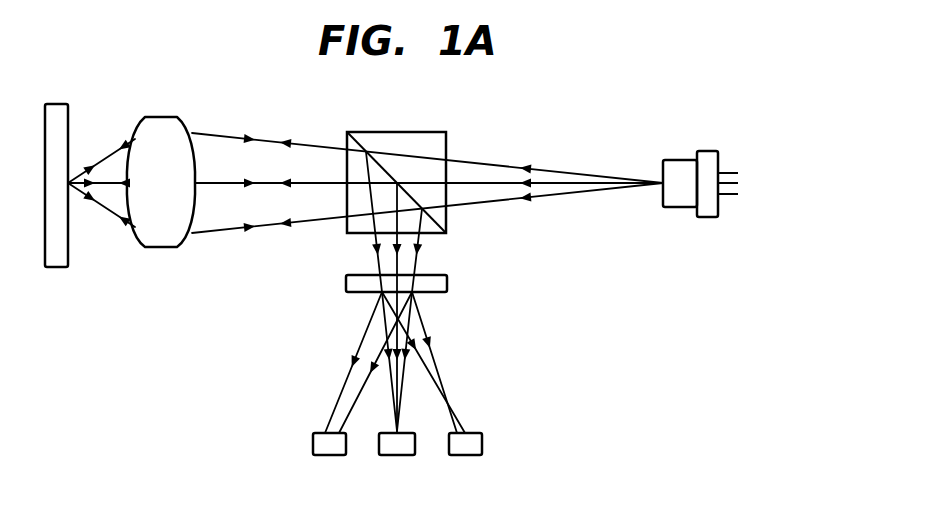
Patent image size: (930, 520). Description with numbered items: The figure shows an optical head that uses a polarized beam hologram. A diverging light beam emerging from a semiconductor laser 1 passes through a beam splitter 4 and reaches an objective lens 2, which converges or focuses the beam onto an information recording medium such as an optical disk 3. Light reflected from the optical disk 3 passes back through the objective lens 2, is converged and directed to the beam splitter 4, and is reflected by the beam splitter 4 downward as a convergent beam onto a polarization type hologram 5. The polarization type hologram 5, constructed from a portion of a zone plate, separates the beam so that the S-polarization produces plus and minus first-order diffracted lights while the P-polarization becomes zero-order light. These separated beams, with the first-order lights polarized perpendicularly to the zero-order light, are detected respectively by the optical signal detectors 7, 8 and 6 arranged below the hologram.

The semiconductor laser 1 is at (700, 163).
The objective lens 2 is at (161, 158).
The optical disk 3 is at (56, 163).
The beam splitter 4 is at (396, 161).
The polarization type hologram 5 is at (420, 283).
The optical signal detector 6 is at (397, 472).
The optical signal detector 7 is at (329, 470).
The optical signal detector 8 is at (465, 469).